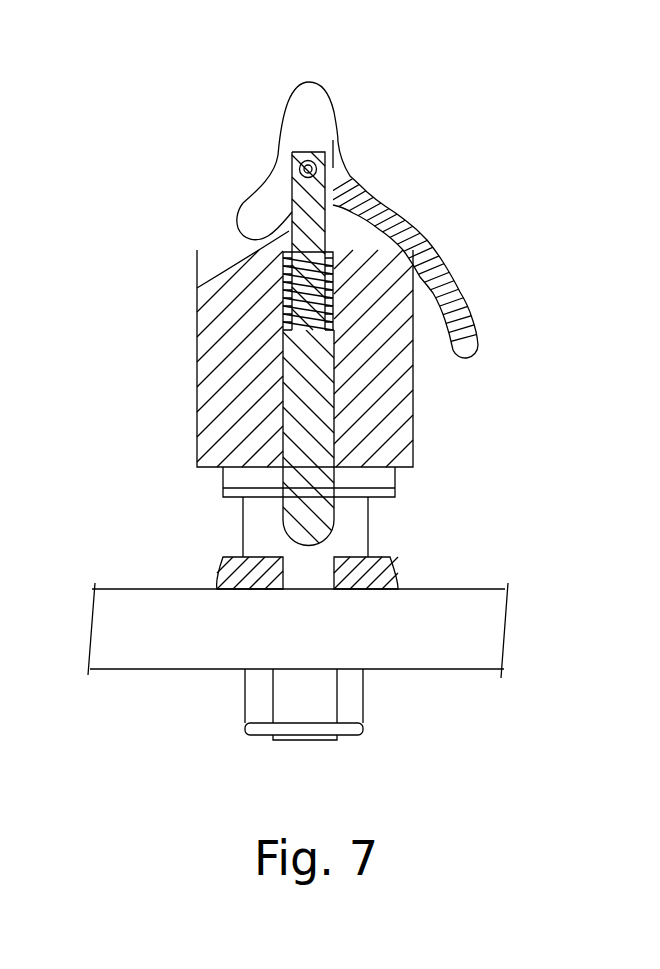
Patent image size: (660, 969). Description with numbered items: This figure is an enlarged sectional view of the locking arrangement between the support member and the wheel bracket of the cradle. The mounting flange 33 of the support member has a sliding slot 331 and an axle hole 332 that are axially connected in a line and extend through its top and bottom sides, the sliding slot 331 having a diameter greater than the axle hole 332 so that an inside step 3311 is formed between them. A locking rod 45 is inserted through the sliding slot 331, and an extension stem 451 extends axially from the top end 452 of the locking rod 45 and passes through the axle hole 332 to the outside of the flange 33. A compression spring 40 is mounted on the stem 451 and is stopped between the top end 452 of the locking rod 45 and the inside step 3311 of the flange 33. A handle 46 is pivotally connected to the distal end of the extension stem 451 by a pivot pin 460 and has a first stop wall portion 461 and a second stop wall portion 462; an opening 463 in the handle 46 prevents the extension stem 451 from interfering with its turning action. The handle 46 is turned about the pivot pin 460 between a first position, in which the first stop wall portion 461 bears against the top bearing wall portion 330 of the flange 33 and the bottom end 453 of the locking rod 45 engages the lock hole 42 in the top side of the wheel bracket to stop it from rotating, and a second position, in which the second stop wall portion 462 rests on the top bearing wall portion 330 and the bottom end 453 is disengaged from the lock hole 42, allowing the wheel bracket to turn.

The mounting flange 33 is at (328, 369).
The top bearing wall portion 330 is at (197, 288).
The sliding slot 331 is at (334, 420).
The inside step 3311 is at (327, 243).
The axle hole 332 is at (327, 250).
The compression spring 40 is at (333, 287).
The lock hole 42 is at (283, 577).
The locking rod 45 is at (329, 351).
The extension stem 451 is at (292, 183).
The top end 452 is at (298, 333).
The bottom end 453 is at (305, 550).
The handle 46 is at (303, 192).
The pivot pin 460 is at (292, 167).
The first stop wall portion 461 is at (280, 128).
The second stop wall portion 462 is at (238, 218).
The opening 463 is at (337, 132).